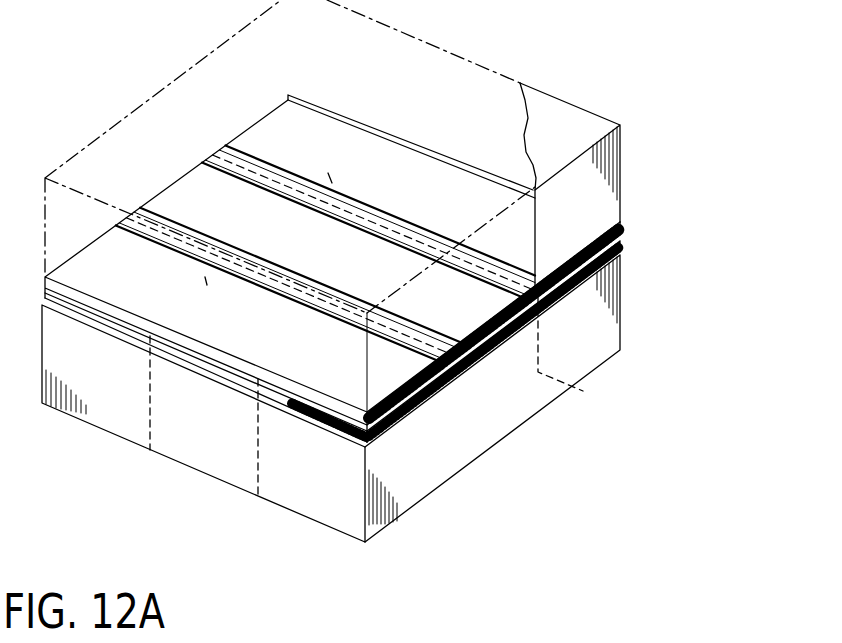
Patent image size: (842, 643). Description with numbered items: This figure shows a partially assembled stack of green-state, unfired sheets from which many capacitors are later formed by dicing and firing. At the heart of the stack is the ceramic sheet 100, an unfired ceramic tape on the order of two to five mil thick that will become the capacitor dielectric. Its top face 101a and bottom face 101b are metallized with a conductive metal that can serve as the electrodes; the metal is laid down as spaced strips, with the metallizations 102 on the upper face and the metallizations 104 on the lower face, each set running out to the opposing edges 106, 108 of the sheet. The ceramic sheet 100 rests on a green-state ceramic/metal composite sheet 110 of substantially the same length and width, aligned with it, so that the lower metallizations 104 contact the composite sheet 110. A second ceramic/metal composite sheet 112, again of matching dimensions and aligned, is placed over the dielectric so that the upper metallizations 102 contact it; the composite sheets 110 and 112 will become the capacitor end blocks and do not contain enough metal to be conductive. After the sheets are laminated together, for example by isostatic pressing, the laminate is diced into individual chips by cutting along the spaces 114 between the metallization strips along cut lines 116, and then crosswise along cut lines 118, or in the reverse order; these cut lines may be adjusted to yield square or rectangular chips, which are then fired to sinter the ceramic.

The ceramic sheet 100 is at (620, 233).
The top face 101a is at (181, 242).
The bottom face 101b is at (315, 414).
The metallization strips 102 is at (191, 165).
The metallization strips 104 is at (467, 380).
The edge 106 is at (290, 93).
The edge 108 is at (590, 337).
The ceramic/metal composite sheet 110 is at (180, 467).
The second ceramic/metal composite sheet 112 is at (502, 66).
The spaces 114 is at (318, 205).
The cut lines 116 is at (338, 168).
The cut lines 118 is at (258, 475).